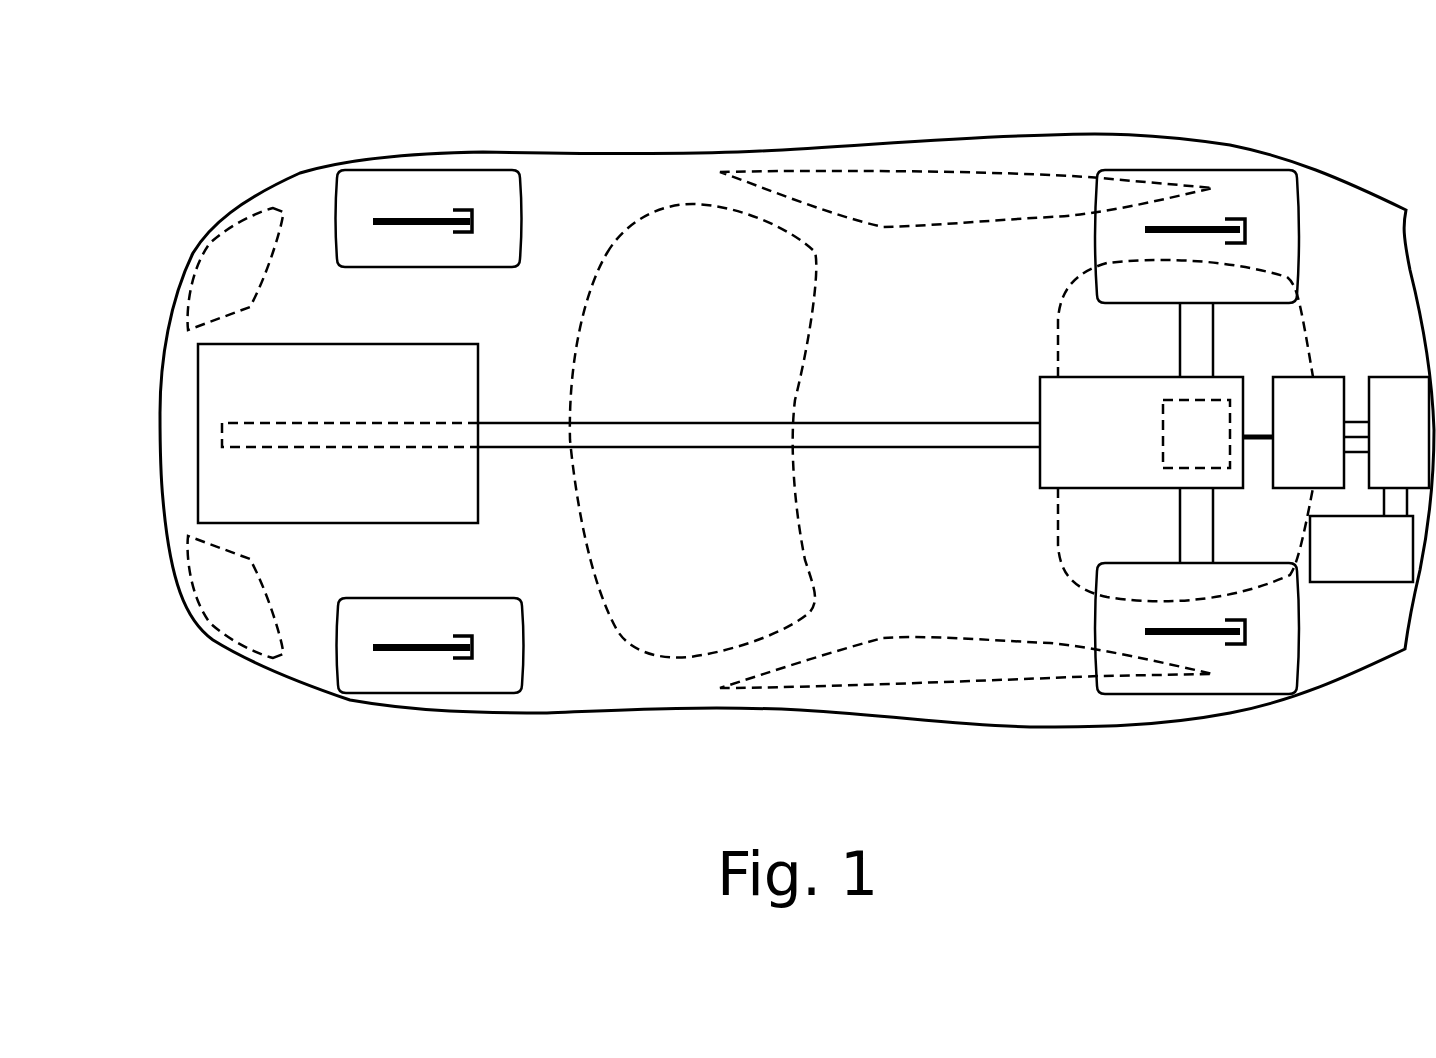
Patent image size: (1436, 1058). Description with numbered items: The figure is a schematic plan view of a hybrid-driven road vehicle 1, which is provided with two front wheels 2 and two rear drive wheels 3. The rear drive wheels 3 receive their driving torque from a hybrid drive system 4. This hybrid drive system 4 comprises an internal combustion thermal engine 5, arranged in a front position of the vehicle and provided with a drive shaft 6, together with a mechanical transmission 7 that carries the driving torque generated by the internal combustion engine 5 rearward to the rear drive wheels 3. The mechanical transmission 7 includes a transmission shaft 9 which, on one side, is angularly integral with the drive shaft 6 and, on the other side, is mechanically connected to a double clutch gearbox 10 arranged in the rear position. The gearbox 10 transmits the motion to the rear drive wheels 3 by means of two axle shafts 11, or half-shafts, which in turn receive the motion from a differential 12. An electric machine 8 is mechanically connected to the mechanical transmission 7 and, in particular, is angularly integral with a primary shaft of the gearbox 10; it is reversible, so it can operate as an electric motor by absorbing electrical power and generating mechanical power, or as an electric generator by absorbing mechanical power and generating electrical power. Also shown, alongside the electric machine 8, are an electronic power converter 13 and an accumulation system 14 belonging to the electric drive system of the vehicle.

The hybrid-driven road vehicle 1 is at (797, 475).
The front wheels 2 is at (417, 198).
The rear drive wheels 3 is at (1278, 188).
The hybrid drive system 4 is at (248, 178).
The internal combustion thermal engine 5 is at (207, 373).
The drive shaft 6 is at (325, 432).
The mechanical transmission 7 is at (833, 125).
The electric machine 8 is at (1321, 432).
The transmission shaft 9 is at (855, 438).
The double clutch gearbox 10 is at (1156, 432).
The axle shafts 11 is at (1193, 329).
The differential 12 is at (1196, 434).
The electronic power converter 13 is at (1399, 446).
The accumulation system 14 is at (1361, 549).